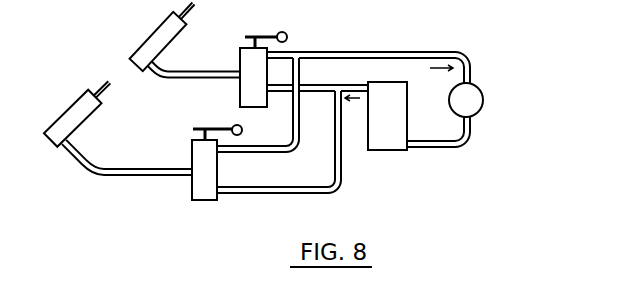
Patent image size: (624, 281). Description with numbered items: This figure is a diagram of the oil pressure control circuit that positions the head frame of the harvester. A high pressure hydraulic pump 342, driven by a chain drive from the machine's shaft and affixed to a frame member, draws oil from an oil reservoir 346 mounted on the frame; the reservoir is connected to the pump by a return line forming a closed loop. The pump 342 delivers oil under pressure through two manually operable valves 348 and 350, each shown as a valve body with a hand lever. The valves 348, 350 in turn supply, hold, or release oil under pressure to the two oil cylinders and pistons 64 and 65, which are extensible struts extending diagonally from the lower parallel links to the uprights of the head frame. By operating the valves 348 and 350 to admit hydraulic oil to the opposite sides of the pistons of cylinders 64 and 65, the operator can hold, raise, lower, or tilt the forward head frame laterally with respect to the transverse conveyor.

The oil cylinder and piston 64 is at (157, 28).
The oil cylinder and piston 65 is at (85, 97).
The manually operable valve 348 is at (258, 68).
The manually operable valve 350 is at (198, 181).
The high pressure hydraulic pump 342 is at (388, 138).
The oil reservoir 346 is at (467, 98).